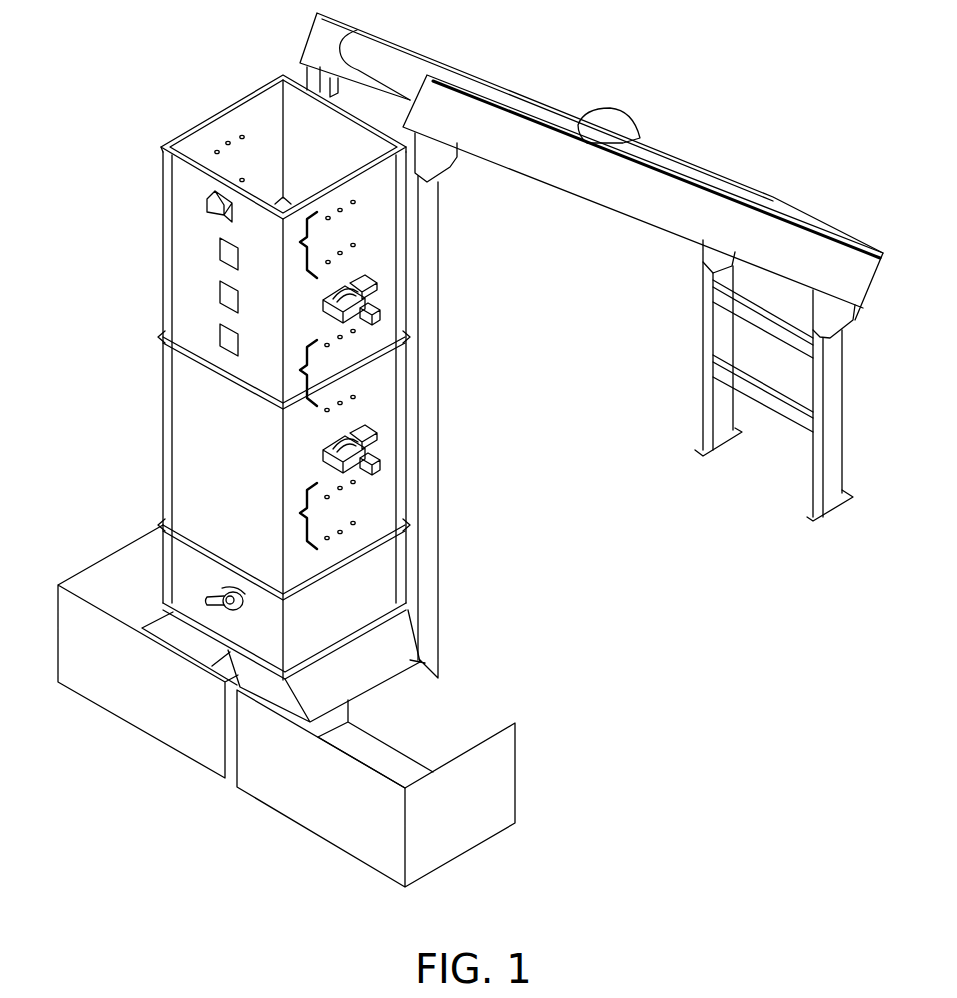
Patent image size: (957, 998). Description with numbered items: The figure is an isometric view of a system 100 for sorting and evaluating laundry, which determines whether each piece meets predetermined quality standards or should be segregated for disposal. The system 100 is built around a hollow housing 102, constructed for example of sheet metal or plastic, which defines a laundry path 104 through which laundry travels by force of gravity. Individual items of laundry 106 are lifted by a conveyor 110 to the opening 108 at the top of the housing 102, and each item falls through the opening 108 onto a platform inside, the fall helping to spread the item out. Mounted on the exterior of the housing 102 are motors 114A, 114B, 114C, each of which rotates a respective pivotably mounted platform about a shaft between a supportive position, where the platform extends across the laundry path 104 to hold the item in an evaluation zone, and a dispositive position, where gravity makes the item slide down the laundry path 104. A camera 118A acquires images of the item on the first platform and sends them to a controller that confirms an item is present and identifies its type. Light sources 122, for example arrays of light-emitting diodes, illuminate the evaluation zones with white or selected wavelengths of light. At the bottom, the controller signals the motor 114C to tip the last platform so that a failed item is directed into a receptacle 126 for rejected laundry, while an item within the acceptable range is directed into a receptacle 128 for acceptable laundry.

The system 100 is at (137, 131).
The hollow housing 102 is at (168, 222).
The laundry path 104 is at (266, 138).
The items of laundry 106 is at (618, 116).
The opening 108 is at (231, 108).
The conveyor 110 is at (778, 197).
The motor 114A is at (355, 295).
The motor 114B is at (355, 445).
The motor 114C is at (212, 600).
The camera 118A is at (214, 200).
The light sources 122 is at (227, 132).
The receptacle 126 is at (317, 813).
The receptacle 128 is at (92, 683).